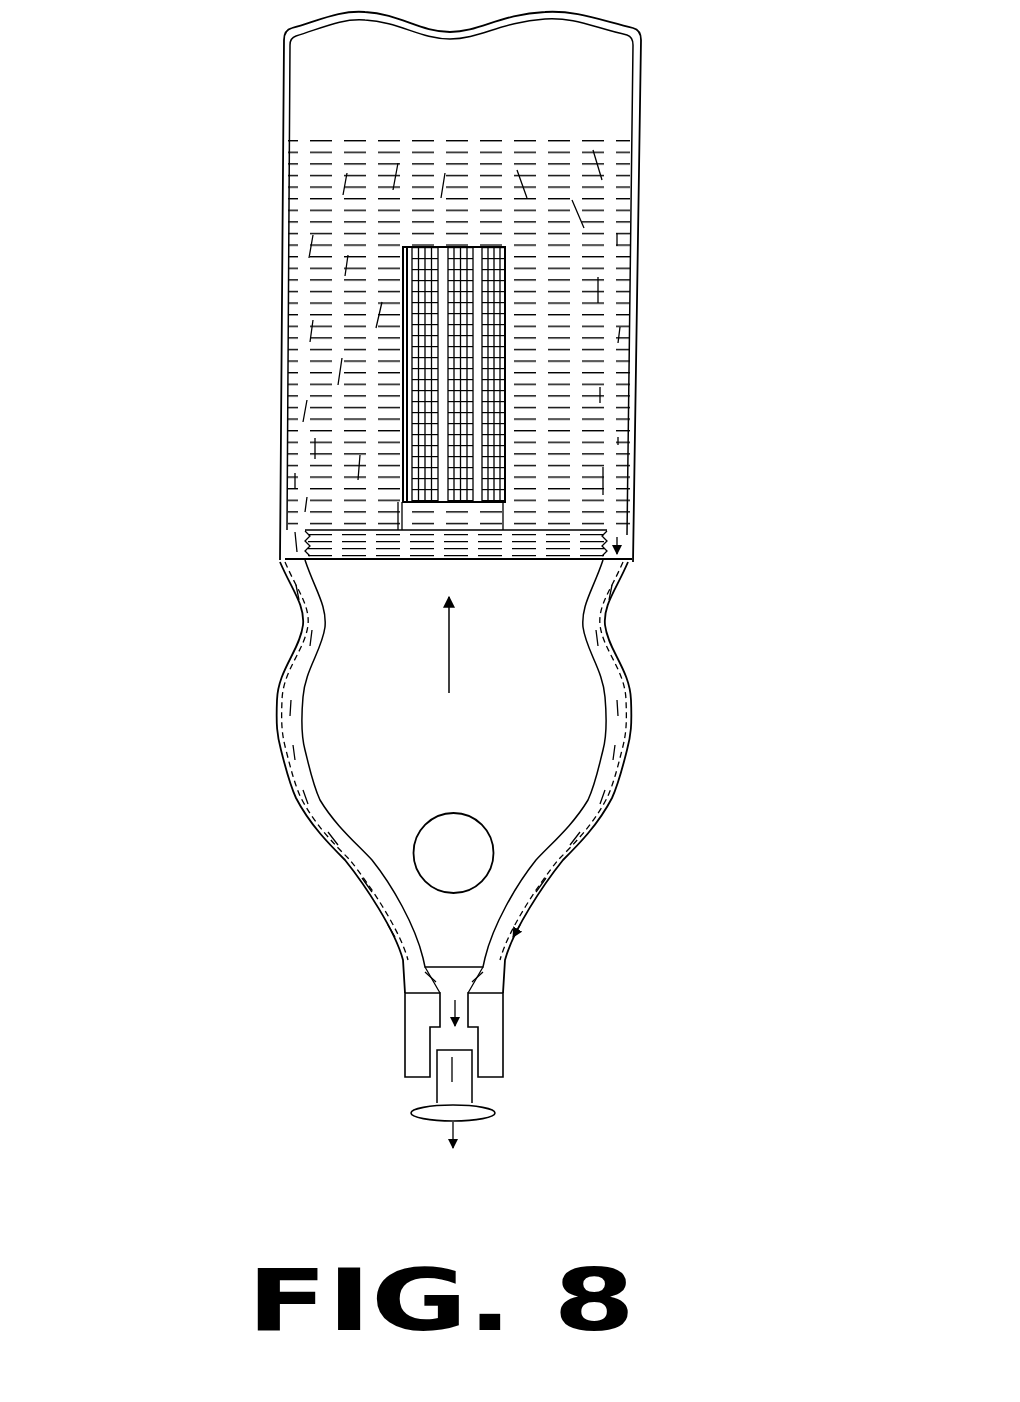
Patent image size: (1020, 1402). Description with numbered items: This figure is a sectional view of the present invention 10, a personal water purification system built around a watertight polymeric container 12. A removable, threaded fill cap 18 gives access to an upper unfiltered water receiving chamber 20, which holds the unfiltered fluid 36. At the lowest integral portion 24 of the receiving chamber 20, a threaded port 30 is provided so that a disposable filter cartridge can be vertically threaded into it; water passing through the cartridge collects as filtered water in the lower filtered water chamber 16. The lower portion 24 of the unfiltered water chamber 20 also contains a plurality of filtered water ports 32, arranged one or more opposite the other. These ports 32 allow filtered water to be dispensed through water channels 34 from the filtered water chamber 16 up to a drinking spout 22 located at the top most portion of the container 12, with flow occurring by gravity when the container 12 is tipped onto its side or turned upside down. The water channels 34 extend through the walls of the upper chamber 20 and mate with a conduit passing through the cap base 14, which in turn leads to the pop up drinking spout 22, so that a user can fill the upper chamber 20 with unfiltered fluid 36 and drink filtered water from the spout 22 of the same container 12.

The present invention 10 is at (758, 188).
The container 12 is at (207, 360).
The filtered water cap 14 is at (492, 1023).
The lower filtered water chamber 16 is at (535, 110).
The unfiltered water cap 18 is at (417, 858).
The upper unfiltered water chamber 20 is at (553, 677).
The pop up spout 22 is at (493, 1122).
The lower portion of chamber 24 is at (360, 560).
The threaded port for cartridge 30 is at (450, 672).
The filtered water port 32 is at (245, 537).
The water channel 34 is at (562, 860).
The unfiltered fluid 36 is at (550, 377).